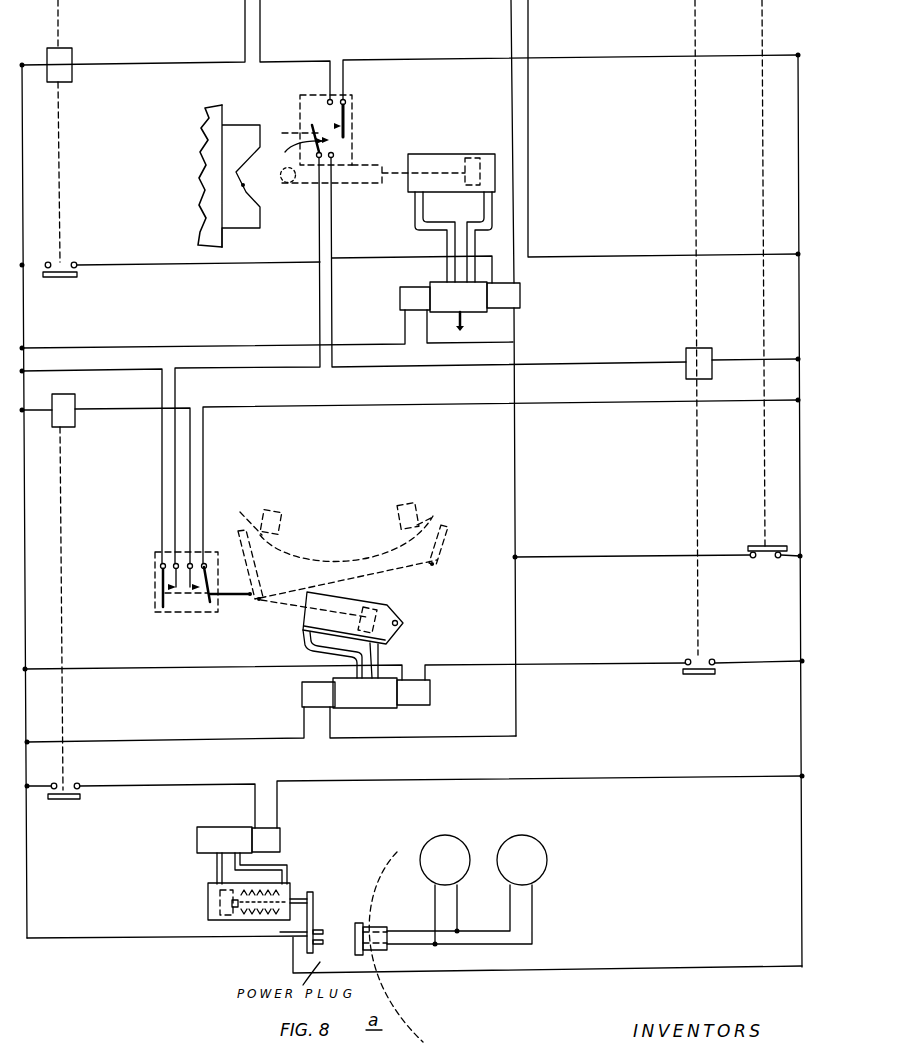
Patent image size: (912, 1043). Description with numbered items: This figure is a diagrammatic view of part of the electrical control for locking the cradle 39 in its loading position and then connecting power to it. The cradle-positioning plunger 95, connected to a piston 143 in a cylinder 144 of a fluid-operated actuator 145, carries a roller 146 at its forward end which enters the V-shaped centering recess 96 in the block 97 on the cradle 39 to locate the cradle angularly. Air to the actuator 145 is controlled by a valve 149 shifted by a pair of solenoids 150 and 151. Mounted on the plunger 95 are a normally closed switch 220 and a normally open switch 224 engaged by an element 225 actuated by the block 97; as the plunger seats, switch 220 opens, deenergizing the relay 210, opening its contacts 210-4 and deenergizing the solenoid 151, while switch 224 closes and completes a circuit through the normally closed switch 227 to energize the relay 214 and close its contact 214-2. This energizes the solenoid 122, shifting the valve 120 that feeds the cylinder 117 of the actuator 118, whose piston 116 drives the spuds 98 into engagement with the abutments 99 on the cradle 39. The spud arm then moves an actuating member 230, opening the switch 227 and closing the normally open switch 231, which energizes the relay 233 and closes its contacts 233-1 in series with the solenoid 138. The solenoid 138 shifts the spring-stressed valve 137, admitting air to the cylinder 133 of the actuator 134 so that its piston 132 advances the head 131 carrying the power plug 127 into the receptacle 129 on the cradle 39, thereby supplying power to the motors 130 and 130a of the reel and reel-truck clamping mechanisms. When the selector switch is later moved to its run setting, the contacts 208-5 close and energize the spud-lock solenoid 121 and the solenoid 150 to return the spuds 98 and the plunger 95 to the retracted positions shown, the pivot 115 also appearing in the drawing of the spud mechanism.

The relay 210 is at (72, 58).
The relay contacts 210-4 is at (68, 258).
The cradle 39 is at (207, 147).
The V-shaped centering recess 96 is at (238, 183).
The block 97 is at (237, 223).
The normally closed switch 220 is at (345, 115).
The element 225 is at (300, 133).
The normally open switch 224 is at (290, 153).
The roller 146 is at (282, 187).
The cradle-positioning plunger 95 is at (348, 182).
The piston 143 is at (475, 152).
The cylinder 144 is at (412, 185).
The fluid-operated actuator 145 is at (445, 192).
The valve 149 is at (442, 282).
The solenoid 150 is at (413, 287).
The solenoid 151 is at (520, 296).
The relay 214 is at (688, 358).
The relay 233 is at (75, 415).
The normally closed switch 227 is at (163, 577).
The normally open switch 231 is at (216, 582).
The actuating member 230 is at (247, 594).
The spuds 98 is at (238, 547).
The abutments 99 is at (250, 528).
The pivot 115 is at (287, 605).
The piston 116 is at (382, 599).
The cylinder 117 is at (347, 595).
The fluid-operated actuator 118 is at (412, 613).
The valve 120 is at (372, 708).
The solenoid 121 is at (312, 697).
The solenoid 122 is at (430, 695).
The relay contacts 208-5 is at (755, 547).
The relay contact 214-2 is at (708, 655).
The relay contacts 233-1 is at (68, 780).
The valve 137 is at (210, 837).
The solenoid 138 is at (282, 840).
The piston 132 is at (223, 903).
The cylinder 133 is at (230, 922).
The fluid-operated actuator 134 is at (253, 922).
The head 131 is at (320, 898).
The power plug 127 is at (322, 932).
The receptacle 129 is at (375, 925).
The motor 130 is at (447, 843).
The motor 130a is at (530, 847).